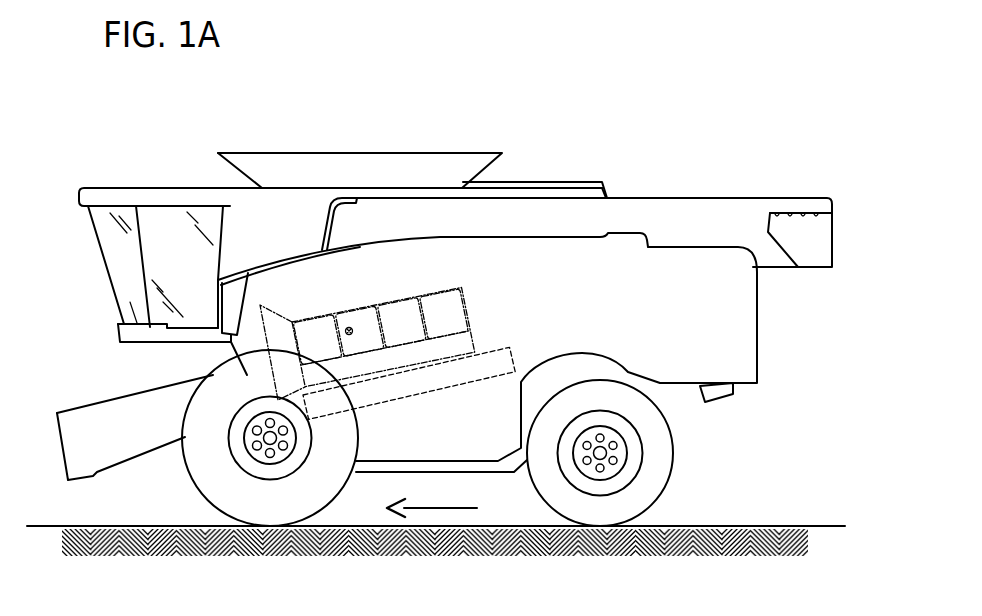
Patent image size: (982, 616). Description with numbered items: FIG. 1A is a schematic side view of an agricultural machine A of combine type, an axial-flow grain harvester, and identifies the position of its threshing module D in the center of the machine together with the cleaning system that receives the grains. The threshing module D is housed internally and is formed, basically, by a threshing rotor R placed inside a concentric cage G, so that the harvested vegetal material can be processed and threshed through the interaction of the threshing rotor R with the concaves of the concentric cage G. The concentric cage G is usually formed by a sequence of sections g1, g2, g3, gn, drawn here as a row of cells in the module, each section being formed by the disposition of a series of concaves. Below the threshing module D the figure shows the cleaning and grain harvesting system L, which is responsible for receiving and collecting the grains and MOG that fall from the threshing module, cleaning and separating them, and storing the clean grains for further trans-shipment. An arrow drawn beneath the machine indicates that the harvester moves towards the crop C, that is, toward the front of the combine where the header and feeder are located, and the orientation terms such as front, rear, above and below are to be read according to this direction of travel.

The agricultural machine A is at (90, 164).
The threshing module D is at (346, 328).
The threshing rotor R is at (400, 312).
The concentric cage G is at (430, 238).
The cleaning and grain harvesting system L is at (495, 360).
The crop C is at (432, 497).
The section g1 is at (317, 340).
The section g2 is at (359, 331).
The section g3 is at (401, 322).
The section gn is at (444, 314).